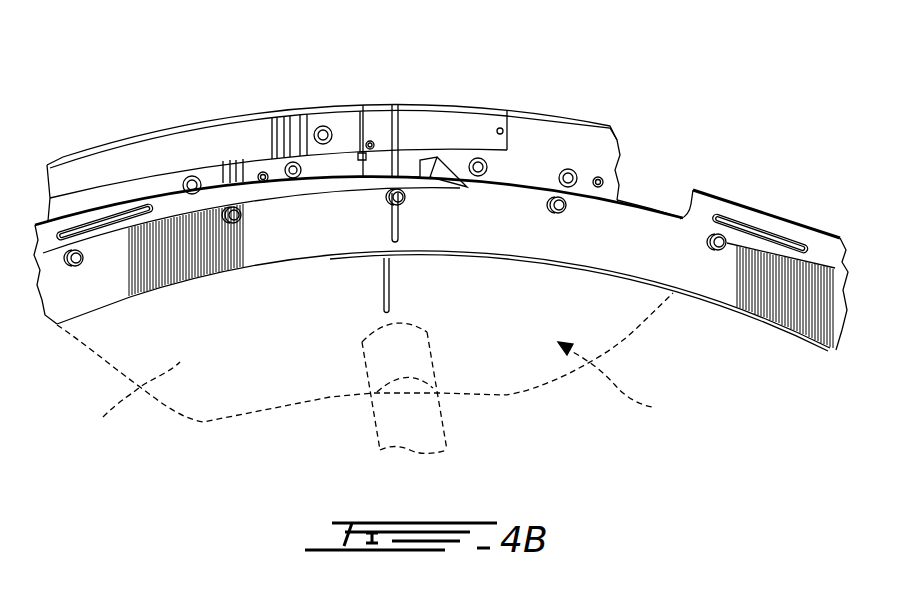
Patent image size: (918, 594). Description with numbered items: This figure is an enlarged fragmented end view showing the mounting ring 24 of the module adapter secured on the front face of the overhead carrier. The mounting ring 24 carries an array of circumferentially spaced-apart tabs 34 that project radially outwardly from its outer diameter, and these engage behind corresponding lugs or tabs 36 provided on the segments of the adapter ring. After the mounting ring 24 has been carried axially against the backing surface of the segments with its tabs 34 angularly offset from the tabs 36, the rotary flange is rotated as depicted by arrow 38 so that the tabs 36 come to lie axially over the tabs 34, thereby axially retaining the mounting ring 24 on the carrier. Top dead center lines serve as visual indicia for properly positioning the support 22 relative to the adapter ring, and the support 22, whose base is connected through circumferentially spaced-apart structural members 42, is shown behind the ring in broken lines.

The support 22 is at (621, 382).
The mounting ring 24 is at (628, 243).
The tabs 34 is at (363, 157).
The tabs 36 is at (413, 163).
The arrow 38 is at (365, 352).
The structural members 42 is at (420, 425).